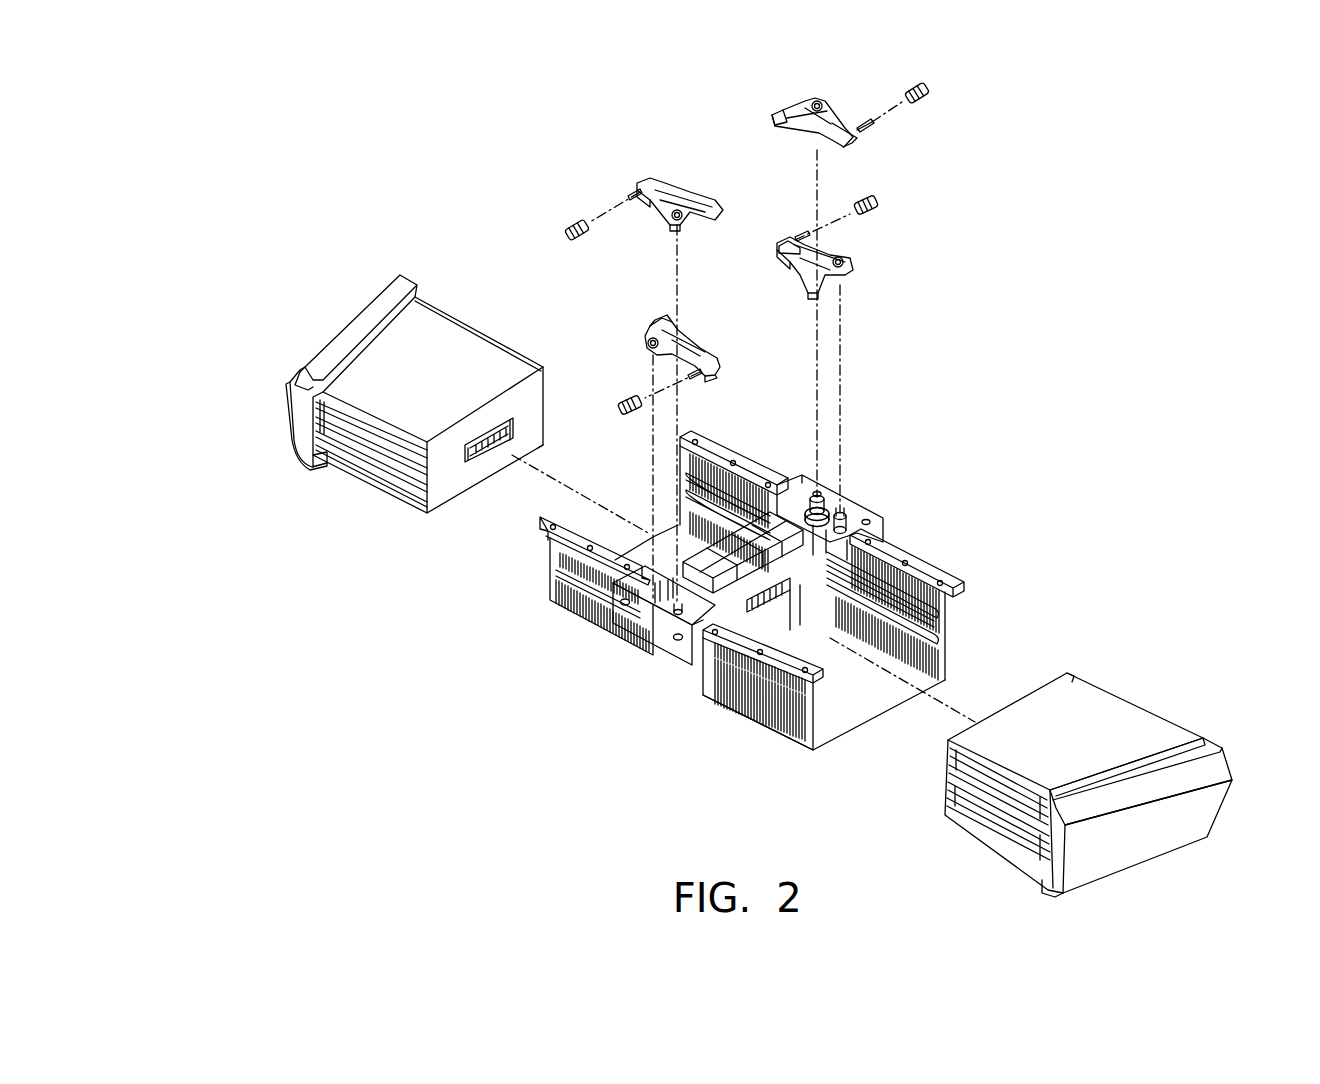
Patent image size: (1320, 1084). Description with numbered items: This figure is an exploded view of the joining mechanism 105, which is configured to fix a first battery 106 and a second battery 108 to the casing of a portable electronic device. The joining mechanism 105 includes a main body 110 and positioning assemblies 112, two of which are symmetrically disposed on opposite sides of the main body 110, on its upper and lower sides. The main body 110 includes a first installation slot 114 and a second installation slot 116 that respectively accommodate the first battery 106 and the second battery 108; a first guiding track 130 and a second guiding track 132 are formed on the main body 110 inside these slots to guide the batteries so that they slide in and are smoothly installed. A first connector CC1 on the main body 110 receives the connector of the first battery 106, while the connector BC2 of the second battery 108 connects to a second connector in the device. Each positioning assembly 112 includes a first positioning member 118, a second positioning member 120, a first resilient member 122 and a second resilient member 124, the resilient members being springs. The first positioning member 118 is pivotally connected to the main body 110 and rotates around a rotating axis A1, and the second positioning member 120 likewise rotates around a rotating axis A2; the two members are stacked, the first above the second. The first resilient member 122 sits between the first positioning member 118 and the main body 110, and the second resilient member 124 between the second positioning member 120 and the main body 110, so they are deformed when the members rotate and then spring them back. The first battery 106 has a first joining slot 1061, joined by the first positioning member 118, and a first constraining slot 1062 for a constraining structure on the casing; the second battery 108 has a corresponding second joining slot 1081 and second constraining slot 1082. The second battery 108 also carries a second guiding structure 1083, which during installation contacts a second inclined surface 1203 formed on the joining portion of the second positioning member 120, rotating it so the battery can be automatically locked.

The joining mechanism 105 is at (1103, 181).
The first battery 106 is at (1100, 725).
The first joining slot 1061 is at (990, 773).
The first constraining slot 1062 is at (1032, 842).
The second battery 108 is at (450, 352).
The second joining slot 1081 is at (378, 402).
The second constraining slot 1082 is at (298, 402).
The second guiding structure 1083 is at (552, 362).
The main body 110 is at (883, 529).
The positioning assembly 112 is at (250, 563).
The first installation slot 114 is at (834, 691).
The second installation slot 116 is at (650, 526).
The first positioning member 118 is at (772, 120).
The second positioning member 120 is at (690, 195).
The second inclined surface 1203 is at (777, 242).
The first resilient member 122 is at (927, 95).
The second resilient member 124 is at (572, 224).
The first guiding track 130 is at (947, 630).
The second guiding track 132 is at (724, 466).
The rotating axis A1 is at (813, 495).
The rotating axis A2 is at (841, 512).
The connector of the second battery BC2 is at (487, 470).
The first connector CC1 is at (755, 608).